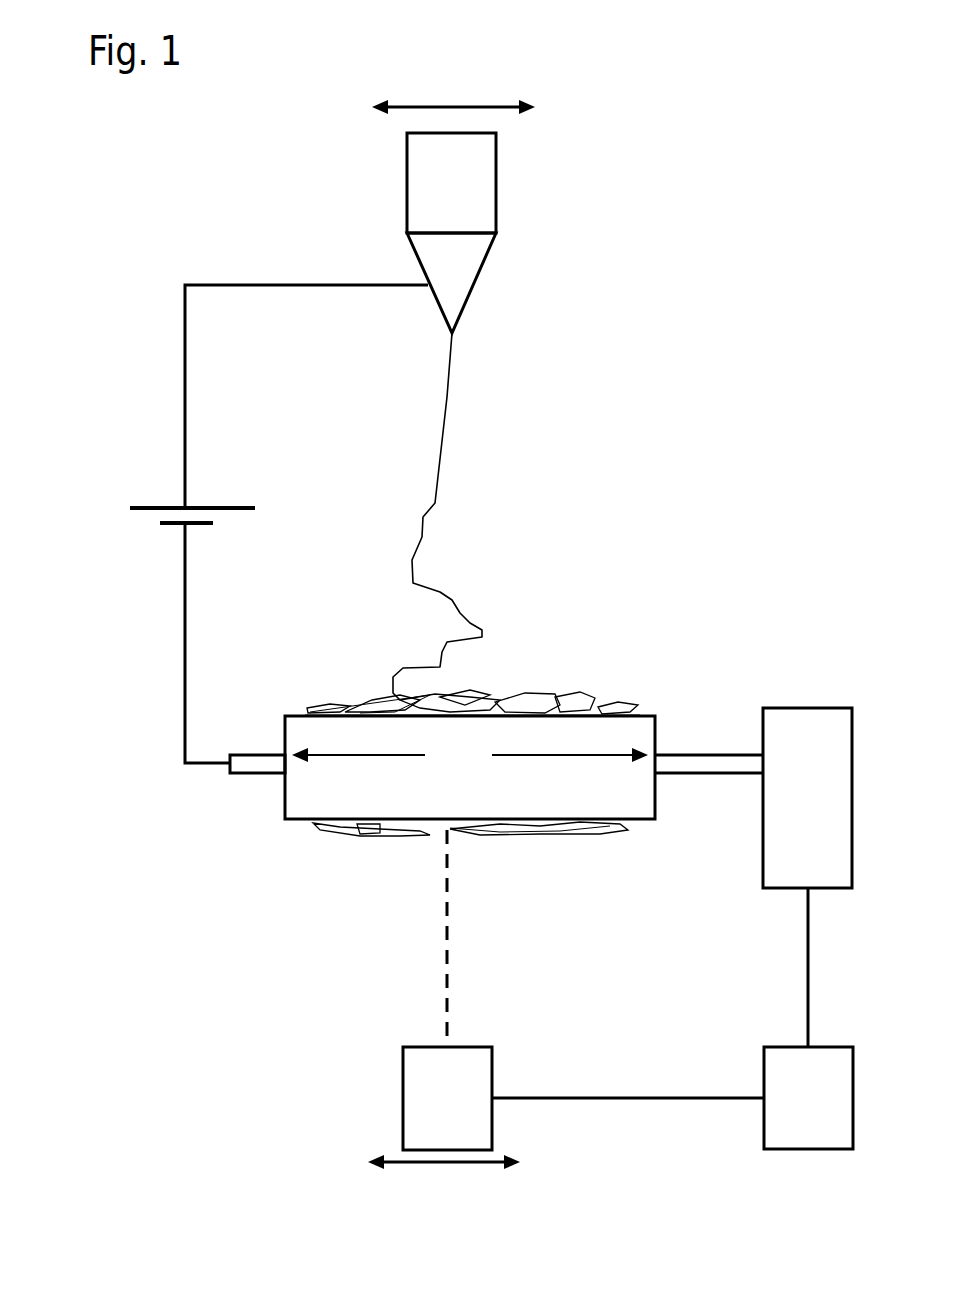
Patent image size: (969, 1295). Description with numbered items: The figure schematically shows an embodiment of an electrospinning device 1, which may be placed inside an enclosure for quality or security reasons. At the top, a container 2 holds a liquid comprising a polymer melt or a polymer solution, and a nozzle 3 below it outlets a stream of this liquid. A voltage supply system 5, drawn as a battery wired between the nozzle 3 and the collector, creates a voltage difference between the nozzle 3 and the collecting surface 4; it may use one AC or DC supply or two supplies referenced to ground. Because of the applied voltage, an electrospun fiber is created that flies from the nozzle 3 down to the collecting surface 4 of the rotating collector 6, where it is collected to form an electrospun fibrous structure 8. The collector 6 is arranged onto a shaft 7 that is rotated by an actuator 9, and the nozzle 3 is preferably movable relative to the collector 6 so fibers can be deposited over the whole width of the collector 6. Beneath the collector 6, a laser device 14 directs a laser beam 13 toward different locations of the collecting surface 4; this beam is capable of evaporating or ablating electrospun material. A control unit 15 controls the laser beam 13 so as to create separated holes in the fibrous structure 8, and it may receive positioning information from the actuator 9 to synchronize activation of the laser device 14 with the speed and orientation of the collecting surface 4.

The electrospinning device 1 is at (678, 134).
The container 2 is at (412, 170).
The nozzle 3 is at (478, 273).
The collecting surface 4 is at (602, 716).
The voltage supply system 5 is at (128, 512).
The rotating collector 6 is at (293, 818).
The shaft 7 is at (698, 753).
The electrospun fibrous structure 8 is at (532, 697).
The actuator 9 is at (835, 710).
The laser beam 13 is at (447, 967).
The laser device 14 is at (407, 1085).
The control unit 15 is at (765, 1080).